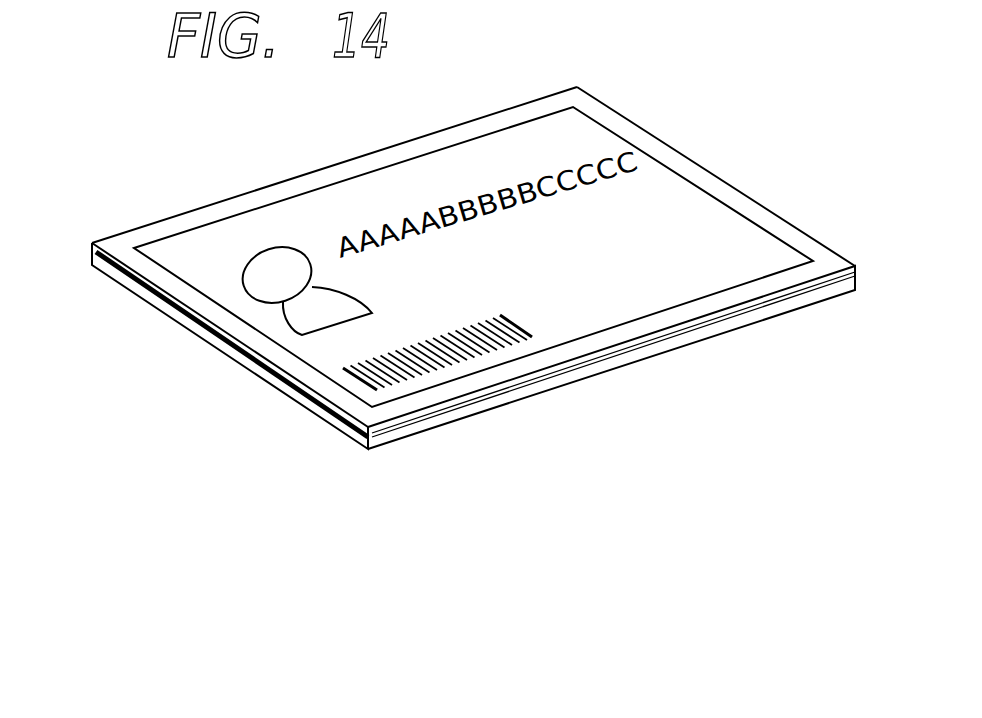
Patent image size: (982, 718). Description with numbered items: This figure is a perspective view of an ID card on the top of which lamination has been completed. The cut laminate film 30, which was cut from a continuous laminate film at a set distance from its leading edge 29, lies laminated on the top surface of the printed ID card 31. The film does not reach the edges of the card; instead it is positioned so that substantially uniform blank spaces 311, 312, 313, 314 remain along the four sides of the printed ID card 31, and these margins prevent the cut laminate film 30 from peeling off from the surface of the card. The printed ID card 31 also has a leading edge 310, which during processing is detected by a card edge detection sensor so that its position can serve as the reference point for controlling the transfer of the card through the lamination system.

The leading edge 29 is at (270, 345).
The cut laminate film 30 is at (678, 223).
The printed ID card 31 is at (755, 312).
The leading edge 310 is at (193, 327).
The blank space 311 is at (190, 300).
The blank space 312 is at (513, 372).
The blank space 313 is at (335, 172).
The blank space 314 is at (670, 150).